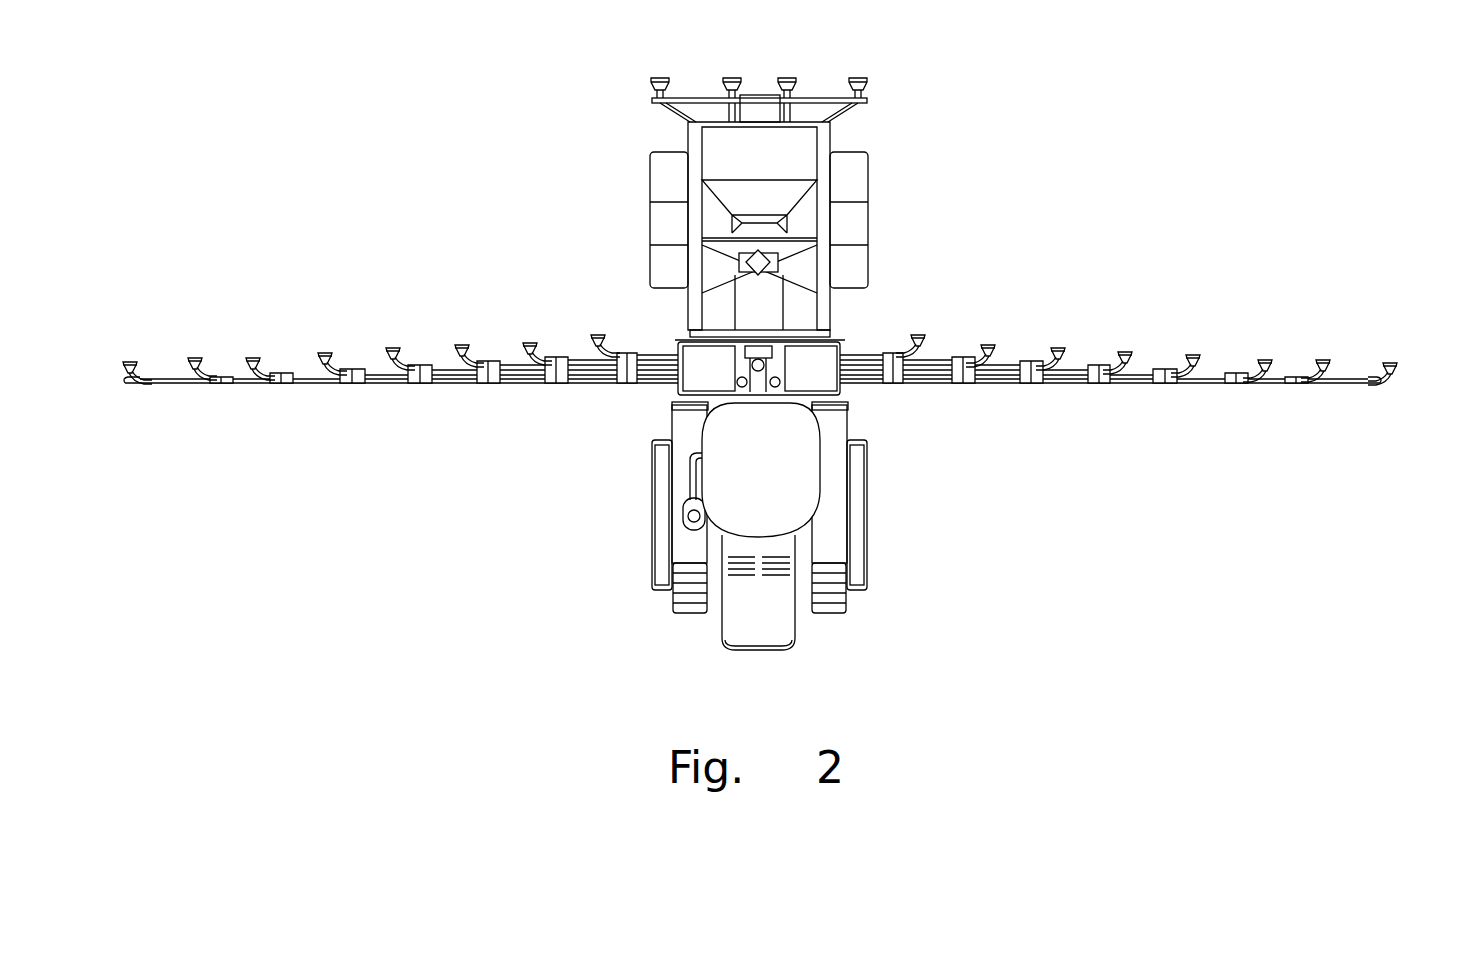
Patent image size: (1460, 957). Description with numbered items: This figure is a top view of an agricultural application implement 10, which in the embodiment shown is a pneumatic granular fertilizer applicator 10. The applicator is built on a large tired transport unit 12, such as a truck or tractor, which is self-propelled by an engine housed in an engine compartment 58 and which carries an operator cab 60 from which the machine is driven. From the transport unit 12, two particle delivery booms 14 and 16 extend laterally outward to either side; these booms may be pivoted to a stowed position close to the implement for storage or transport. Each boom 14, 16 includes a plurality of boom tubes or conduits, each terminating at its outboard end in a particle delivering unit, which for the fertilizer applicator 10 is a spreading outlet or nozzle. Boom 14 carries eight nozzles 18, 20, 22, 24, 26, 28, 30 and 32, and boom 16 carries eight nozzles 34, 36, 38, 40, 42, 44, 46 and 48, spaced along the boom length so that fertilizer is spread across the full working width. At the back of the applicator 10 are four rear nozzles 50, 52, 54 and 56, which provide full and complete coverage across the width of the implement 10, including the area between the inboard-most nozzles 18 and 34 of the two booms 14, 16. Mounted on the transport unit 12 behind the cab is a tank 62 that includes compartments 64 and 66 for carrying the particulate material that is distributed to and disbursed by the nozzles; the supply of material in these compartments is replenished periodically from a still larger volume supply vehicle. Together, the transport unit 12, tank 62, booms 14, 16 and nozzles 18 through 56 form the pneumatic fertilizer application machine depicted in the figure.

The agricultural application implement 10 is at (505, 120).
The transport unit 12 is at (807, 540).
The particle delivery boom 14 is at (431, 414).
The particle delivery boom 16 is at (1065, 414).
The nozzle 18 is at (598, 334).
The nozzle 20 is at (530, 342).
The nozzle 22 is at (462, 344).
The nozzle 24 is at (393, 347).
The nozzle 26 is at (325, 352).
The nozzle 28 is at (253, 357).
The nozzle 30 is at (195, 357).
The nozzle 32 is at (130, 361).
The nozzle 34 is at (918, 334).
The nozzle 36 is at (988, 344).
The nozzle 38 is at (1058, 347).
The nozzle 40 is at (1125, 351).
The nozzle 42 is at (1193, 354).
The nozzle 44 is at (1265, 359).
The nozzle 46 is at (1323, 359).
The nozzle 48 is at (1390, 362).
The rear nozzle 50 is at (658, 77).
The rear nozzle 52 is at (731, 77).
The rear nozzle 54 is at (786, 77).
The rear nozzle 56 is at (857, 77).
The engine compartment 58 is at (751, 607).
The operator cab 60 is at (782, 462).
The tank 62 is at (822, 176).
The compartment 64 is at (745, 205).
The compartment 66 is at (745, 268).